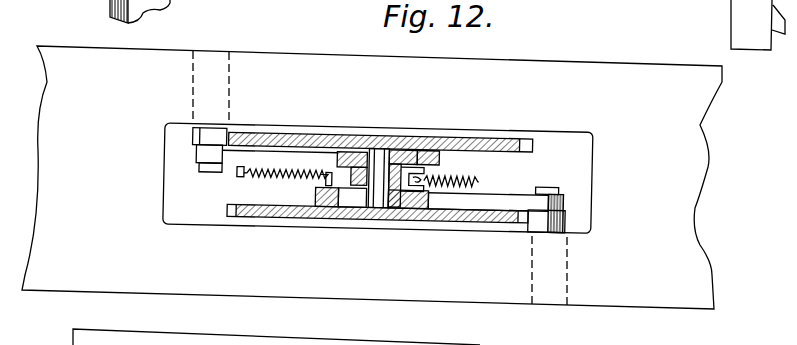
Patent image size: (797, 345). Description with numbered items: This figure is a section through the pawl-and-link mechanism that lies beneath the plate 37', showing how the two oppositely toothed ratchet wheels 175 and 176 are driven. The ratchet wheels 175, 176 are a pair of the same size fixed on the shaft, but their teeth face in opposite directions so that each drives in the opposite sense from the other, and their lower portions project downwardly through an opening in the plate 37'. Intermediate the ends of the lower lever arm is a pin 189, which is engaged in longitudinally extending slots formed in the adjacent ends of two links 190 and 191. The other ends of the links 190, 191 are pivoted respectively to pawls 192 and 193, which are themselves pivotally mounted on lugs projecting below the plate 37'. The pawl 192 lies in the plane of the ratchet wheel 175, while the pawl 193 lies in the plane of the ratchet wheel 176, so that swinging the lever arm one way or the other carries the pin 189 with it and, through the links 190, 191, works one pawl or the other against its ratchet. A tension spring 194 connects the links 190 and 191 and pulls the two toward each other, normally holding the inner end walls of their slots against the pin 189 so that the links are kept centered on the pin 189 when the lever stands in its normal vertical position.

The plate 37' is at (372, 191).
The ratchet wheel 175 is at (486, 138).
The ratchet wheel 176 is at (493, 216).
The pin 189 is at (387, 148).
The link 190 is at (285, 153).
The link 191 is at (443, 196).
The pawl 192 is at (197, 137).
The pawl 193 is at (547, 210).
The tension spring 194 is at (288, 183).